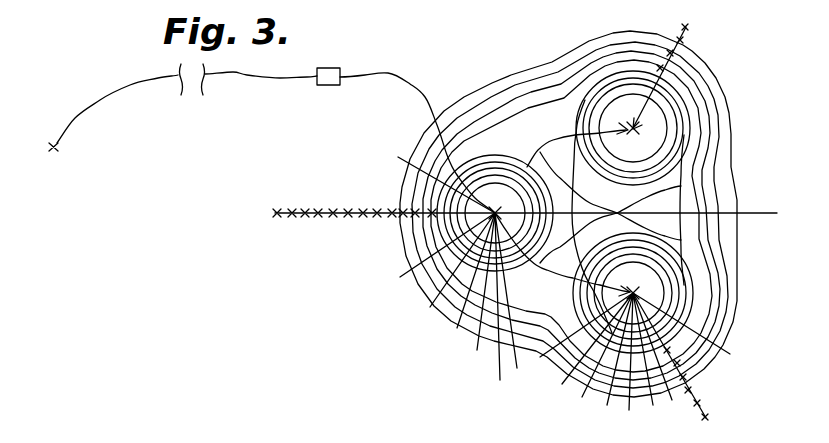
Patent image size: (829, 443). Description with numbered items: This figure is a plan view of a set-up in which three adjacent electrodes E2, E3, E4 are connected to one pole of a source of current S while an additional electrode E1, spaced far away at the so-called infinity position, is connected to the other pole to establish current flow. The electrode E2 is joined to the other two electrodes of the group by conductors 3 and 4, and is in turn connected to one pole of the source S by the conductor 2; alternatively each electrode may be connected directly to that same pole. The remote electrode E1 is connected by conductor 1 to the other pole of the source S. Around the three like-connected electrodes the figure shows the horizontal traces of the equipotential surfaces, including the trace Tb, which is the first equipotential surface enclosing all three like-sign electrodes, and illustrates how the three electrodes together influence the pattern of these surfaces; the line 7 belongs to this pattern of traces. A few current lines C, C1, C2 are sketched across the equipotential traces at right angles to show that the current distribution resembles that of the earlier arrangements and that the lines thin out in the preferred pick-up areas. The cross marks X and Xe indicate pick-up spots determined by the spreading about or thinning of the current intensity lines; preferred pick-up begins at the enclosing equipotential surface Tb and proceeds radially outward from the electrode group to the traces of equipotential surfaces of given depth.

The conductor 1 is at (276, 79).
The conductor 2 is at (422, 103).
The conductor 3 is at (577, 145).
The conductor 4 is at (547, 268).
The flow line through electrode E2 7 is at (545, 231).
The source of current S is at (328, 76).
The electrode E1 is at (121, 107).
The electrode E2 is at (495, 213).
The electrode E3 is at (633, 128).
The electrode E4 is at (633, 293).
The equipotential trace Tb is at (518, 120).
The cross marks X is at (309, 193).
The cross marks Xe is at (690, 35).
The current line C is at (383, 216).
The current line C1 is at (458, 328).
The current line C2 is at (517, 358).